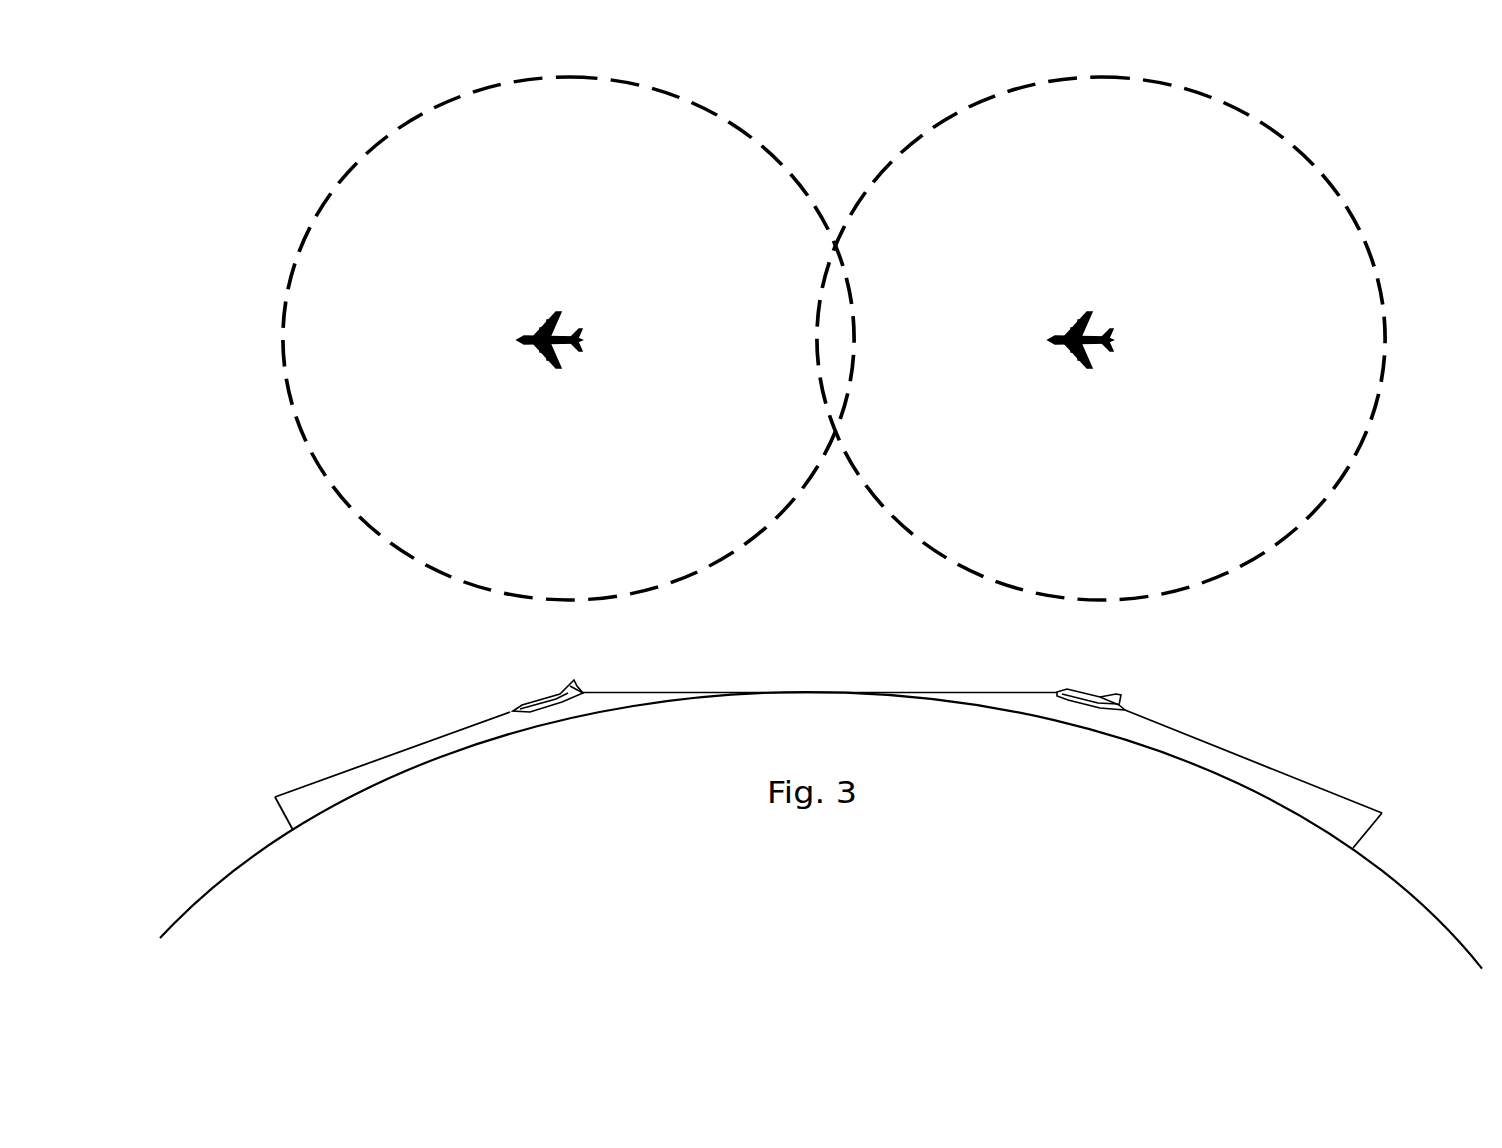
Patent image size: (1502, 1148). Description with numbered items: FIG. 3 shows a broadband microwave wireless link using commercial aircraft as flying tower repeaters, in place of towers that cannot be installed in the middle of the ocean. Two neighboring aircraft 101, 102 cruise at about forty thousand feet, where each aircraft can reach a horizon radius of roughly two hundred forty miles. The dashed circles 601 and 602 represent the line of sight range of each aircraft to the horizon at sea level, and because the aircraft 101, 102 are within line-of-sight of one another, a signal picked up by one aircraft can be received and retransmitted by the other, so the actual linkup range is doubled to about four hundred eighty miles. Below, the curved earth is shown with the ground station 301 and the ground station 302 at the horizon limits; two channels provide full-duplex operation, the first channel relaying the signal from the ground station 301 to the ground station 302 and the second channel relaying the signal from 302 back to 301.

The first aircraft 101 is at (1089, 483).
The second aircraft 102 is at (546, 484).
The line of sight range of first aircraft 601 is at (1114, 338).
The line of sight range of second aircraft 602 is at (568, 333).
The ground station 301 is at (1253, 779).
The ground station 302 is at (384, 771).